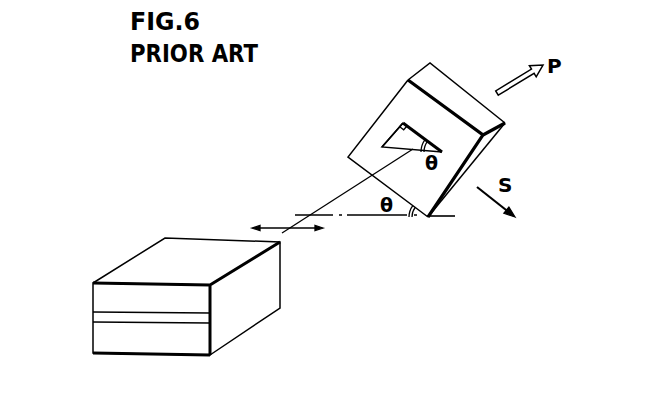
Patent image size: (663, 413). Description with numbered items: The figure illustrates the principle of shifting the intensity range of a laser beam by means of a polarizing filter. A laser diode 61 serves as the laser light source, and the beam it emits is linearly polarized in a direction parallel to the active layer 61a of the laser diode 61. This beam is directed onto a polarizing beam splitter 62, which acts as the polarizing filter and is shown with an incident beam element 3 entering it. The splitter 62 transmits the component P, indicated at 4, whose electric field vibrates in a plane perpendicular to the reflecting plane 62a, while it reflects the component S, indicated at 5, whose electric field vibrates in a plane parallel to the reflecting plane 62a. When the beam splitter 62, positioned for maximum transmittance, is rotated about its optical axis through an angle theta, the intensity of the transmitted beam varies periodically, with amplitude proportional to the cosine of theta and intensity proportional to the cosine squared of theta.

The polarizing beam splitter 62 is at (430, 63).
The reflecting plane 62a is at (497, 113).
The prism 3 is at (413, 151).
The component P 4 is at (425, 139).
The component S 5 is at (393, 133).
The laser diode 61 is at (272, 295).
The active layer 61a is at (93, 315).